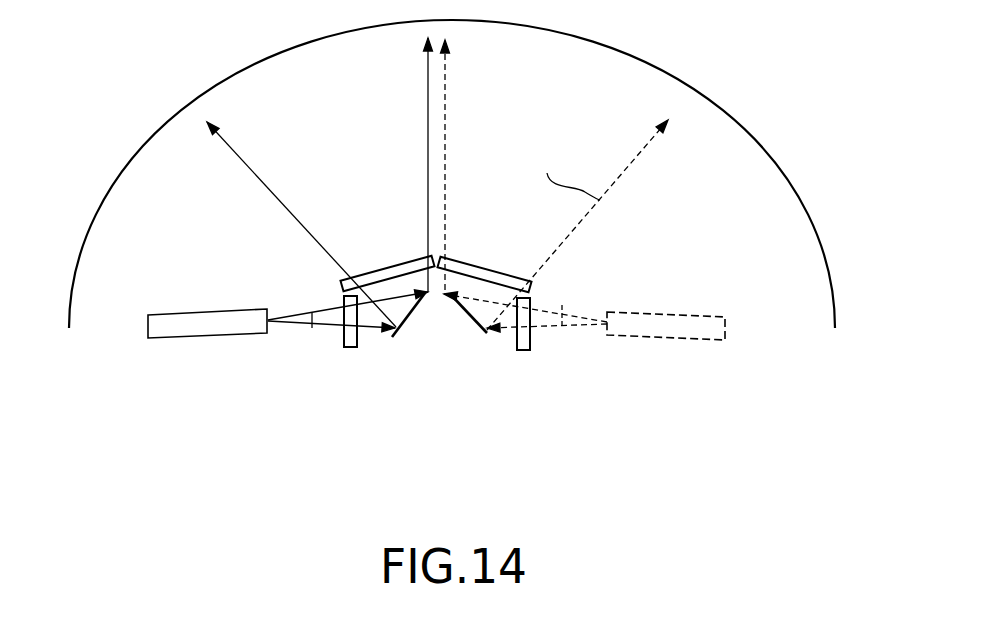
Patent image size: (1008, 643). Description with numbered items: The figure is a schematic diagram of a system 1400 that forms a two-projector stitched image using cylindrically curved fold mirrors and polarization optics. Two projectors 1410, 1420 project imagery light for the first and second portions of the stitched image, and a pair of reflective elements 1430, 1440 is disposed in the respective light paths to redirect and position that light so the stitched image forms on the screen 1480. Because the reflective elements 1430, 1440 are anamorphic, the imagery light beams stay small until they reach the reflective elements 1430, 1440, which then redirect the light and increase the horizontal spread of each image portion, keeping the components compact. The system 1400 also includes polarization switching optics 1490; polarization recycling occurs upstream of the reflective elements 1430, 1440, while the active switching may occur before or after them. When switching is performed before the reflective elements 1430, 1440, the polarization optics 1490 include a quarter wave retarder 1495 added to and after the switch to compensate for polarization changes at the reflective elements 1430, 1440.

The system 1400 is at (473, 273).
The projector 1410 is at (193, 326).
The projector 1420 is at (707, 315).
The reflective element 1430 is at (403, 320).
The reflective element 1440 is at (478, 322).
The screen 1480 is at (657, 65).
The polarization switching optics 1490 is at (388, 267).
The quarter wave retarder 1495 is at (341, 289).